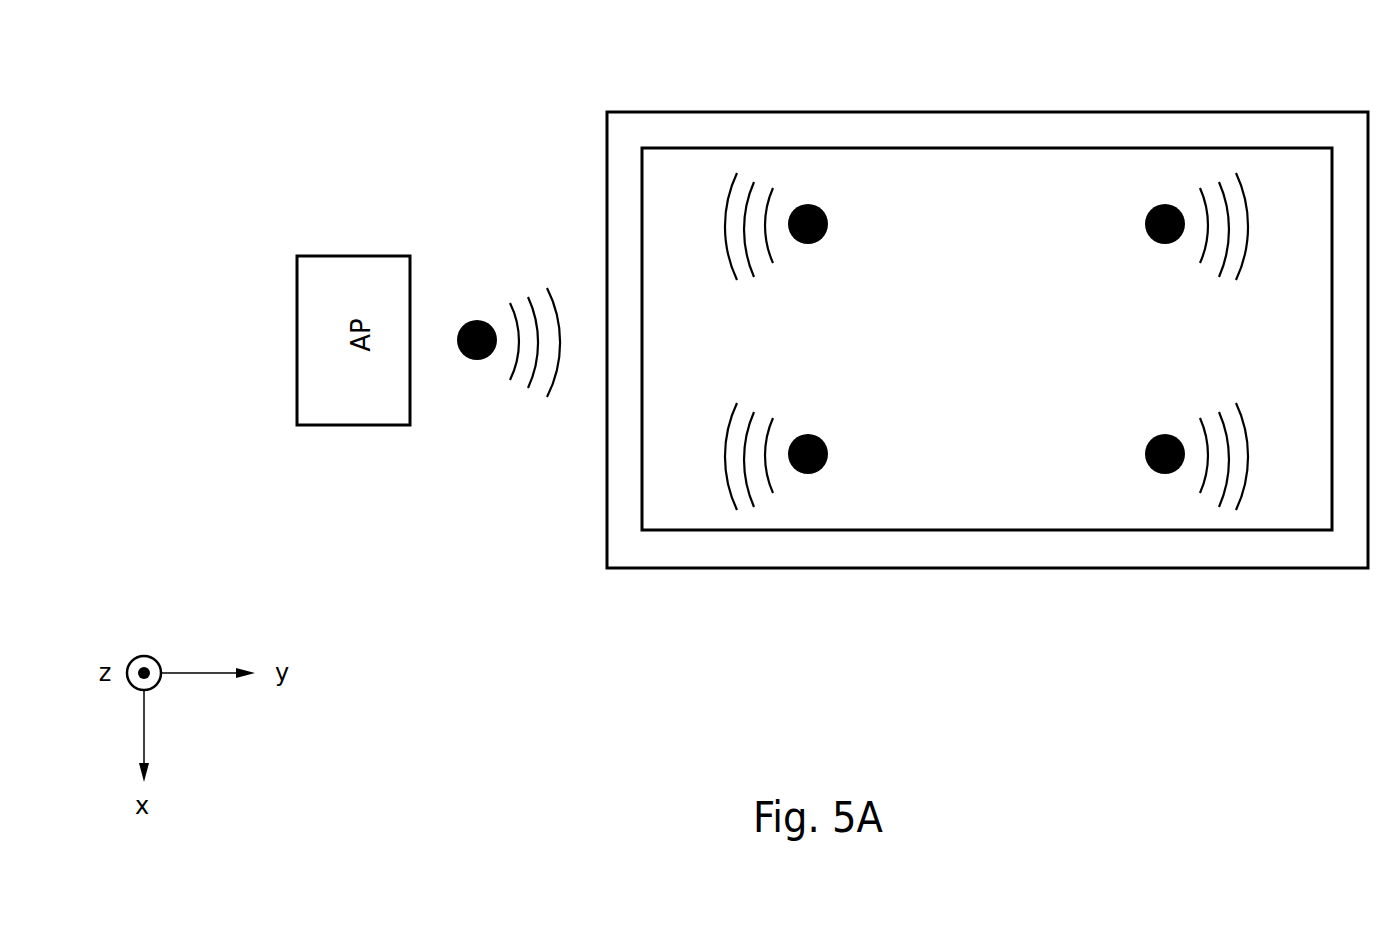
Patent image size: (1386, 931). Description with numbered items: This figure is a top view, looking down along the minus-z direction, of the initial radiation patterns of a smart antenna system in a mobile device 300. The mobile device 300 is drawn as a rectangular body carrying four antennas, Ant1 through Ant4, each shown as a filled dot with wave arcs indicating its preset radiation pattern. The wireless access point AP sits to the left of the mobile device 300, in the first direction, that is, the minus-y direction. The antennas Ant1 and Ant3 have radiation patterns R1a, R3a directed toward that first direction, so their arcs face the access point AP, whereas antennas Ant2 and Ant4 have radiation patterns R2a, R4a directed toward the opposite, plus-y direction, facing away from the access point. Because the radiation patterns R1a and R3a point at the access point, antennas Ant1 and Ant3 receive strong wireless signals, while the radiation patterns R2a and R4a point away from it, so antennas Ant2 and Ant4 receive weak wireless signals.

The mobile device 300 is at (1342, 110).
The radiation pattern R1a is at (783, 145).
The radiation pattern R2a is at (1202, 145).
The radiation pattern R3a is at (783, 535).
The radiation pattern R4a is at (1202, 535).